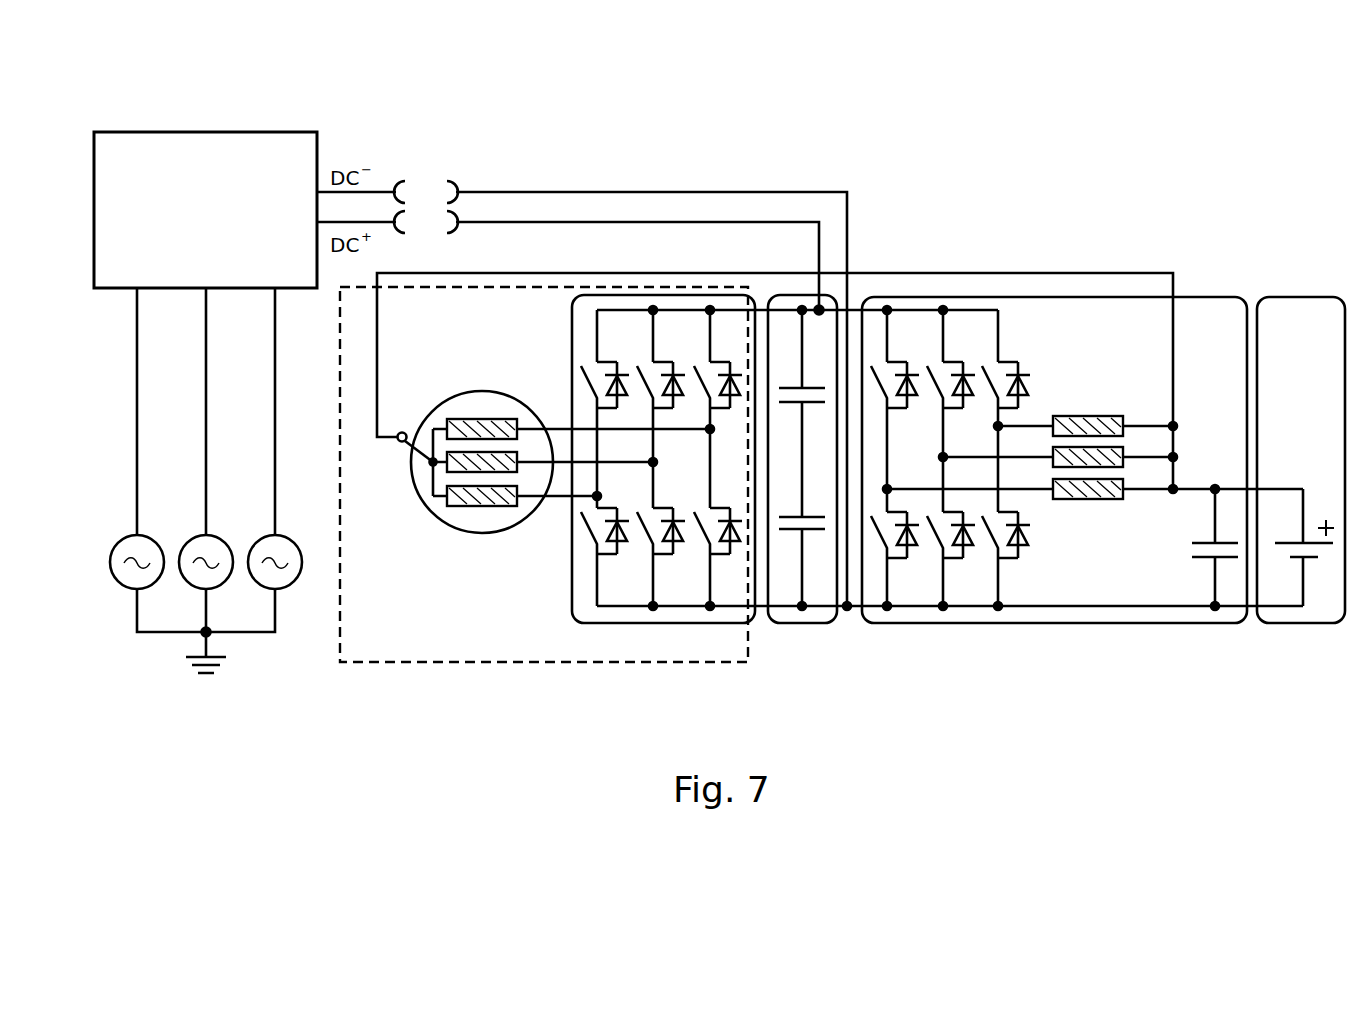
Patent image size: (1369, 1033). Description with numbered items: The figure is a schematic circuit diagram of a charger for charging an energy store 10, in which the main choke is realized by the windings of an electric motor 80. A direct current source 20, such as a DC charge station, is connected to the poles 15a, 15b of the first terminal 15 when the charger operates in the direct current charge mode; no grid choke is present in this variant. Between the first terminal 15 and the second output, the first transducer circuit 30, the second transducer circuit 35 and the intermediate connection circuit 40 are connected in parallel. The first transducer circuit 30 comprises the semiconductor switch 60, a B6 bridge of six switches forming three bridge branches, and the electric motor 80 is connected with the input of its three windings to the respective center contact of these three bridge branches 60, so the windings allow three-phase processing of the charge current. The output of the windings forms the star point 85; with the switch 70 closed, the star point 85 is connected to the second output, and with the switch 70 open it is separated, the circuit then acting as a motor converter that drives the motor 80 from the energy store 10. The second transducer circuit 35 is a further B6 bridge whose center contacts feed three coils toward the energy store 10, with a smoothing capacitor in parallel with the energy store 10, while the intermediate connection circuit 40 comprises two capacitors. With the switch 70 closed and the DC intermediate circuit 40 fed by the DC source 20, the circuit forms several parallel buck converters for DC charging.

The energy store 10 is at (1300, 623).
The first terminal 15 is at (437, 144).
The pole of the first terminal 15a is at (448, 222).
The pole of the first terminal 15b is at (462, 164).
The direct current source 20 is at (210, 131).
The first transducer circuit 30 is at (540, 663).
The second transducer circuit 35 is at (1090, 623).
The intermediate connection circuit 40 is at (803, 623).
The semiconductor switch 60 is at (656, 623).
The switch 70 is at (403, 446).
The electric motor 80 is at (486, 536).
The star point 85 is at (432, 466).